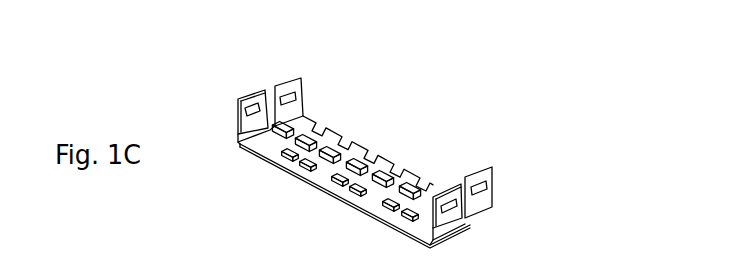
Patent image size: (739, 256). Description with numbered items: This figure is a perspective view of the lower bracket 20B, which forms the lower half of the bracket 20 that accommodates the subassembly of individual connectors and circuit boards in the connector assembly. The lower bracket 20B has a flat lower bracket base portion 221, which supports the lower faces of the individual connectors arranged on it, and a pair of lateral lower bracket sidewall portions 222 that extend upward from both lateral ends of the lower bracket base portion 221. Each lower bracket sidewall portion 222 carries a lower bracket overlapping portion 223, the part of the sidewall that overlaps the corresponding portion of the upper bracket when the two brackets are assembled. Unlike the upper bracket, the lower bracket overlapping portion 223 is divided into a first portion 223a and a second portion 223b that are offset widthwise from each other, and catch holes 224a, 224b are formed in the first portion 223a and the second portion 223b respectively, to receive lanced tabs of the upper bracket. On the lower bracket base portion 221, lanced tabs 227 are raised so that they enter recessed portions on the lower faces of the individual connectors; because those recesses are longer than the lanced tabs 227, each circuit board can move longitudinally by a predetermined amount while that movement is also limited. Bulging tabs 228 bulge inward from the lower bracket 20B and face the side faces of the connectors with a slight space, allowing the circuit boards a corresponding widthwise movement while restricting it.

The bracket 20 is at (381, 131).
The lower bracket 20B is at (381, 131).
The lower bracket base portion 221 is at (355, 157).
The lower bracket sidewall portion 222 is at (381, 129).
The lower bracket overlapping portion 223 is at (381, 122).
The first portion 223a is at (417, 126).
The second portion 223b is at (359, 139).
The catch hole 224a is at (296, 93).
The catch hole 224b is at (312, 158).
The lanced tab 227 is at (354, 167).
The bulging tab 228 is at (353, 194).